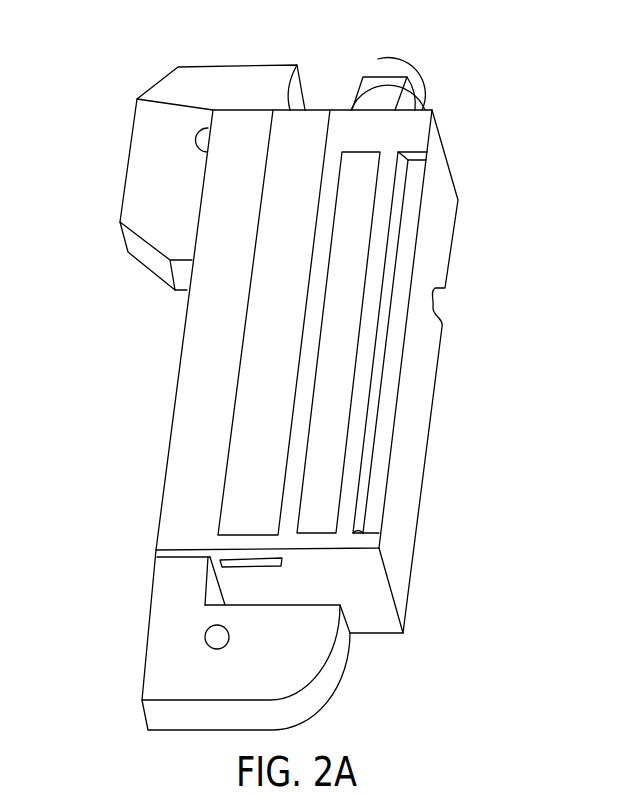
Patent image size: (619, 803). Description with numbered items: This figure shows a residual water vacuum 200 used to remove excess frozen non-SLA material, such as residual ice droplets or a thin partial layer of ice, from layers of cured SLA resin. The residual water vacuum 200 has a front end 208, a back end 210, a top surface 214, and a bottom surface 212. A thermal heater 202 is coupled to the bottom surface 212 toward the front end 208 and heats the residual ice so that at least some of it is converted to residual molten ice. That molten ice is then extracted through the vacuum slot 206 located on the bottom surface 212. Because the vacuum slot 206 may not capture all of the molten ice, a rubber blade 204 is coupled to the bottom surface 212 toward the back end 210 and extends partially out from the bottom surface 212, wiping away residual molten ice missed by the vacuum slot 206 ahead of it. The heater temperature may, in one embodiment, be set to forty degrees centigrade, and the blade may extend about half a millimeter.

The residual water vacuum 200 is at (96, 78).
The thermal heater 202 is at (290, 185).
The rubber blade 204 is at (398, 200).
The vacuum slot 206 is at (330, 422).
The front end 208 is at (158, 453).
The back end 210 is at (448, 148).
The bottom surface 212 is at (210, 227).
The top surface 214 is at (405, 608).